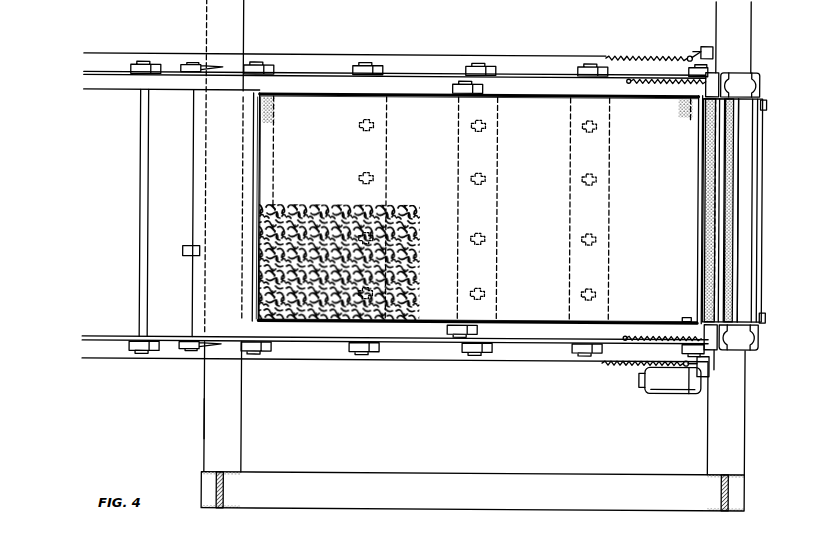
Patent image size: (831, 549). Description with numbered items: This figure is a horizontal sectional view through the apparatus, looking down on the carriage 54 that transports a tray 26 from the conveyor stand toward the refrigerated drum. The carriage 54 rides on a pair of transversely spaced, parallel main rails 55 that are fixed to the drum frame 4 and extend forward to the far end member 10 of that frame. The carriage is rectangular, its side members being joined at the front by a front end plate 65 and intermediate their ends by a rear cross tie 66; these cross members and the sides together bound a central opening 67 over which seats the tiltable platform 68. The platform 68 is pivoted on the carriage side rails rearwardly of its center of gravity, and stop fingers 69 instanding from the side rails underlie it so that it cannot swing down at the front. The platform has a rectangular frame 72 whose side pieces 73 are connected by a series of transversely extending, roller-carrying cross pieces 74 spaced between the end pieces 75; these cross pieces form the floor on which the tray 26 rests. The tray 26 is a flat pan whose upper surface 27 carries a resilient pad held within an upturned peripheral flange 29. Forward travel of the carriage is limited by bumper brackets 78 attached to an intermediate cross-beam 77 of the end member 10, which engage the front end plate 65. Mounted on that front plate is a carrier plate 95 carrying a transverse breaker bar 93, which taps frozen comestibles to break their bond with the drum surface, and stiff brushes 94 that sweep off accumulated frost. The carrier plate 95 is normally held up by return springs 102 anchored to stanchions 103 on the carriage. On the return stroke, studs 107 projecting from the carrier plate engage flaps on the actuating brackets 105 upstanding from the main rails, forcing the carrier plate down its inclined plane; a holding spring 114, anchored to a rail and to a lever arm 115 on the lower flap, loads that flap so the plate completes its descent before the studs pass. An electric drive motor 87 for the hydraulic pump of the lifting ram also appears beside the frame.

The drum frame 4 is at (197, 418).
The far end member 10 is at (203, 437).
The tray 26 is at (260, 164).
The upper surface of tray 27 is at (288, 172).
The peripheral flange 29 is at (257, 192).
The carriage 54 is at (421, 72).
The main rails 55 is at (517, 56).
The front end plate 65 is at (739, 82).
The rear cross tie 66 is at (193, 204).
The central opening 67 is at (513, 95).
The tiltable platform 68 is at (554, 91).
The stop fingers 69 is at (688, 103).
The rectangular frame 72 is at (297, 89).
The side pieces 73 is at (401, 95).
The cross pieces 74 is at (387, 159).
The end pieces 75 is at (275, 159).
The cross-beam 77 is at (751, 26).
The bumper brackets 78 is at (766, 101).
The electric drive motor 87 is at (664, 393).
The breaker bar 93 is at (762, 202).
The brushes 94 is at (705, 210).
The carrier plate 95 is at (750, 192).
The return springs 102 is at (665, 80).
The stanchion 103 is at (627, 81).
The actuating brackets 105 is at (699, 44).
The stud 107 is at (716, 63).
The holding spring 114 is at (652, 56).
The lever arm 115 is at (689, 54).